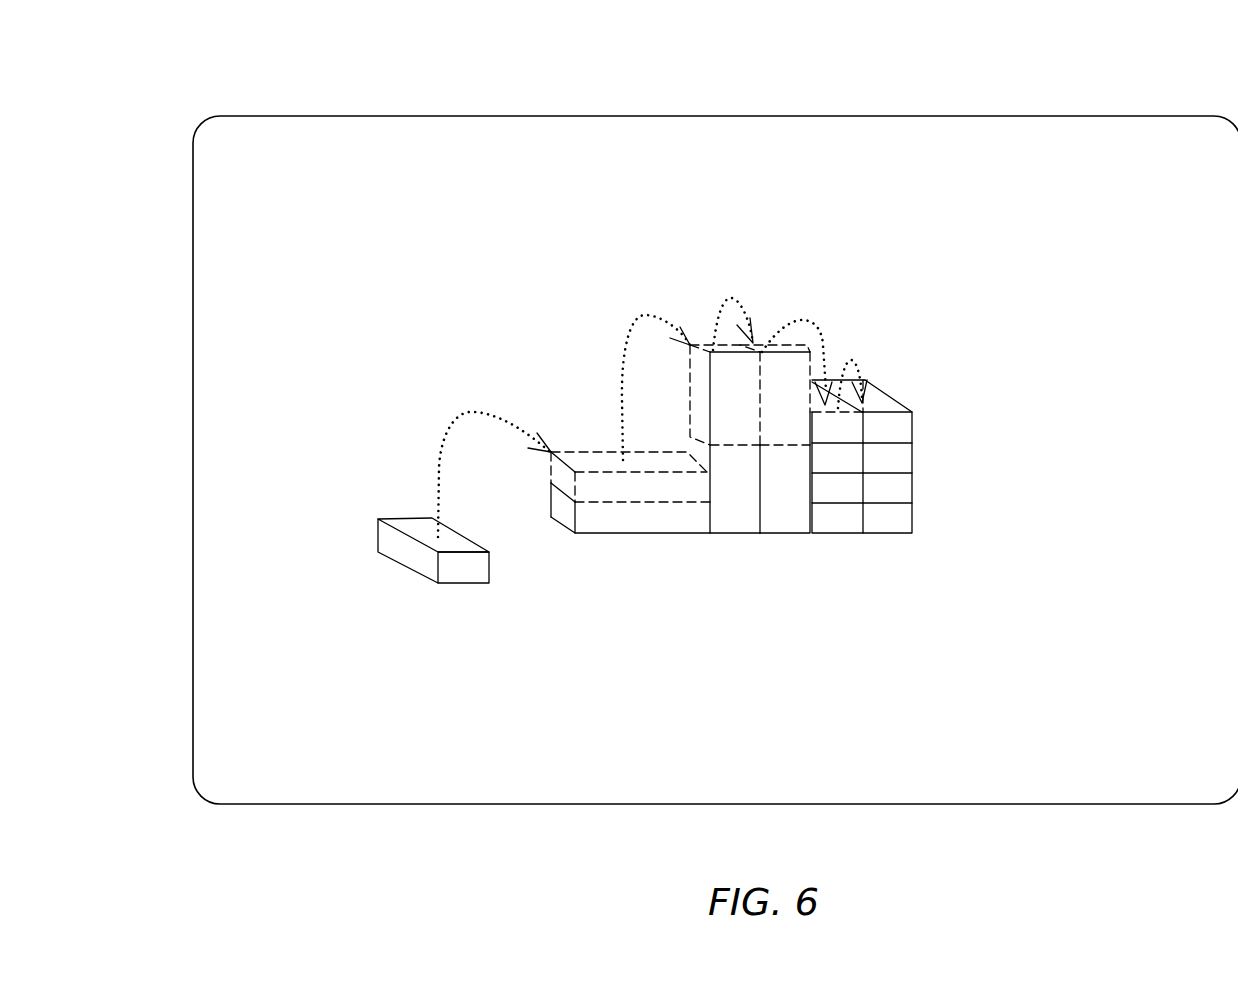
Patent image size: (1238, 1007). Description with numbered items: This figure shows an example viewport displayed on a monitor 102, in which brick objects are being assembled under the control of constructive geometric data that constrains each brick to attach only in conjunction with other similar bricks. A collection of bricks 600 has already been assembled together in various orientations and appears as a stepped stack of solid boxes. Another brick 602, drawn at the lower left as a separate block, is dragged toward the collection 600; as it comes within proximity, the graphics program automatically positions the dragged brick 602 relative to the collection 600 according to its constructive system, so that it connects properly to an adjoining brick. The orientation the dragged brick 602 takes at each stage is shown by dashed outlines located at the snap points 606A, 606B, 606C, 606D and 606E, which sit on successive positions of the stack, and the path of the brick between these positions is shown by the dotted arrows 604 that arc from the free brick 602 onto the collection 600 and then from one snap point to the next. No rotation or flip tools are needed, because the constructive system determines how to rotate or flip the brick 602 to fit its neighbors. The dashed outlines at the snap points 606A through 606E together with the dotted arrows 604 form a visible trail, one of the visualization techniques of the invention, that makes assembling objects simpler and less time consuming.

The monitor 102 is at (741, 115).
The collection of bricks 600 is at (819, 386).
The dragged brick 602 is at (378, 537).
The dotted arrows 604 is at (450, 393).
The snap point 606A is at (583, 370).
The snap point 606B is at (700, 310).
The snap point 606C is at (763, 313).
The snap point 606D is at (805, 310).
The snap point 606E is at (845, 310).